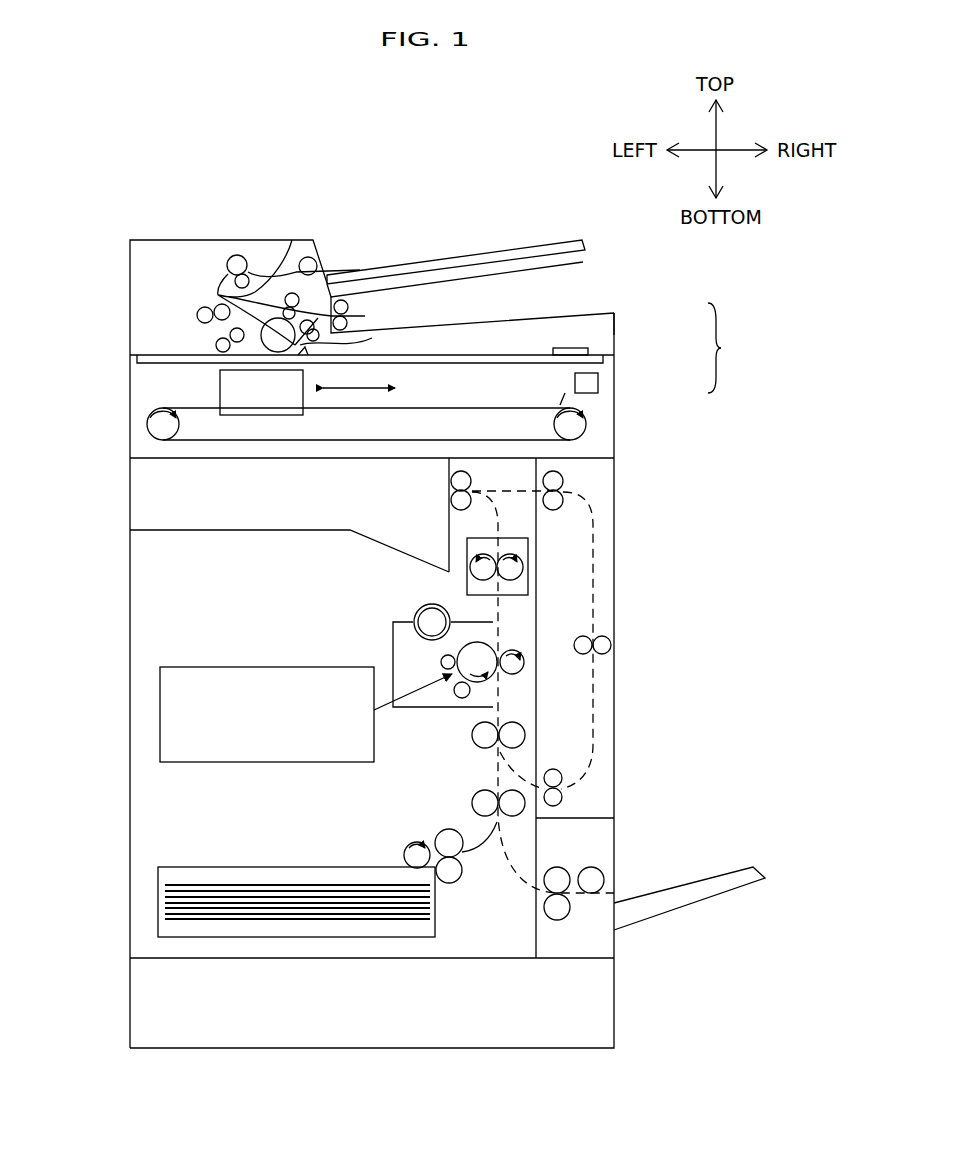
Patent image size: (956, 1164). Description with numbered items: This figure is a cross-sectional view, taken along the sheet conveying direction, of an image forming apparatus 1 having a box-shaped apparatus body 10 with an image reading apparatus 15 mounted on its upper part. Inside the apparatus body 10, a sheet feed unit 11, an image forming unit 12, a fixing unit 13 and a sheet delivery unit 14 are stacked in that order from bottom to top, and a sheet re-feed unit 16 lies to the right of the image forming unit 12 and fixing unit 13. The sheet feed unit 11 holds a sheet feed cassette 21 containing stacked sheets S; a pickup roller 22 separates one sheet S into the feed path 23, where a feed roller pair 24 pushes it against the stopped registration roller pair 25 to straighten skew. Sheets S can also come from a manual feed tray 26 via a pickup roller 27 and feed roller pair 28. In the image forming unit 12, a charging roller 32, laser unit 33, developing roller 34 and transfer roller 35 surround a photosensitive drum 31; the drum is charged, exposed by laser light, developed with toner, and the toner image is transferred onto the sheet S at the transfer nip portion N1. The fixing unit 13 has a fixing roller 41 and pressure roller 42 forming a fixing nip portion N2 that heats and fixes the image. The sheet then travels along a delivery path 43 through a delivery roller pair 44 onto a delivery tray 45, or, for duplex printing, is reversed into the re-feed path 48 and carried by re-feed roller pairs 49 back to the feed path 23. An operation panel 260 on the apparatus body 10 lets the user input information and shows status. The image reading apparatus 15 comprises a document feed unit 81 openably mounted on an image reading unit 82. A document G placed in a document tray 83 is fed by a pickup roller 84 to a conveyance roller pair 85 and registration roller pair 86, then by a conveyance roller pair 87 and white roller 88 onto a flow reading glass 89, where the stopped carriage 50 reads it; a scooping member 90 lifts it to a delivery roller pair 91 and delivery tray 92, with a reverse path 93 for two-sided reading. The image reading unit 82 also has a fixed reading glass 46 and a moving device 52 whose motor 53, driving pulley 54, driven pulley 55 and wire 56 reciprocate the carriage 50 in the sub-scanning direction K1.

The image forming apparatus 1 is at (400, 162).
The apparatus body 10 is at (108, 567).
The sheet feed unit 11 is at (450, 806).
The image forming unit 12 is at (382, 633).
The fixing unit 13 is at (545, 575).
The sheet delivery unit 14 is at (445, 492).
The image reading apparatus 15 is at (738, 348).
The sheet re-feed unit 16 is at (600, 617).
The sheet feed cassette 21 is at (205, 867).
The pickup roller 22 is at (408, 855).
The feed path 23 is at (477, 850).
The feed roller pair 24 is at (474, 802).
The registration roller pair 25 is at (473, 735).
The manual feed tray 26 is at (713, 873).
The pickup roller 27 is at (591, 867).
The feed roller pair 28 is at (556, 867).
The photosensitive drum 31 is at (485, 647).
The charging roller 32 is at (441, 660).
The laser unit 33 is at (203, 667).
The developing roller 34 is at (462, 698).
The transfer roller 35 is at (507, 655).
The fixing roller 41 is at (480, 578).
The pressure roller 42 is at (512, 553).
The delivery path 43 is at (492, 510).
The delivery roller pair 44 is at (466, 478).
The delivery tray 45 is at (300, 530).
The fixed reading glass 46 is at (477, 363).
The re-feed path 48 is at (593, 713).
The re-feed roller pairs 49 is at (556, 477).
The carriage 50 is at (213, 397).
The moving device 52 is at (543, 392).
The motor 53 is at (592, 383).
The driving pulley 54 is at (585, 430).
The driven pulley 55 is at (153, 430).
The wire 56 is at (418, 408).
The document feed unit 81 is at (623, 325).
The image reading unit 82 is at (623, 370).
The document tray 83 is at (553, 240).
The pickup roller 84 is at (314, 258).
The conveyance roller pair 85 is at (236, 256).
The registration roller pair 86 is at (198, 315).
The conveyance roller pair 87 is at (216, 345).
The white roller 88 is at (220, 304).
The flow reading glass 89 is at (153, 363).
The scooping member 90 is at (373, 338).
The delivery roller pair 91 is at (348, 305).
The delivery tray 92 is at (580, 313).
The reverse path 93 is at (290, 240).
The operation panel 260 is at (553, 348).
The document G is at (428, 258).
The sheet S is at (265, 885).
The transfer nip portion N1 is at (503, 676).
The fixing nip portion N2 is at (498, 582).
The sub-scanning direction K1 is at (359, 376).